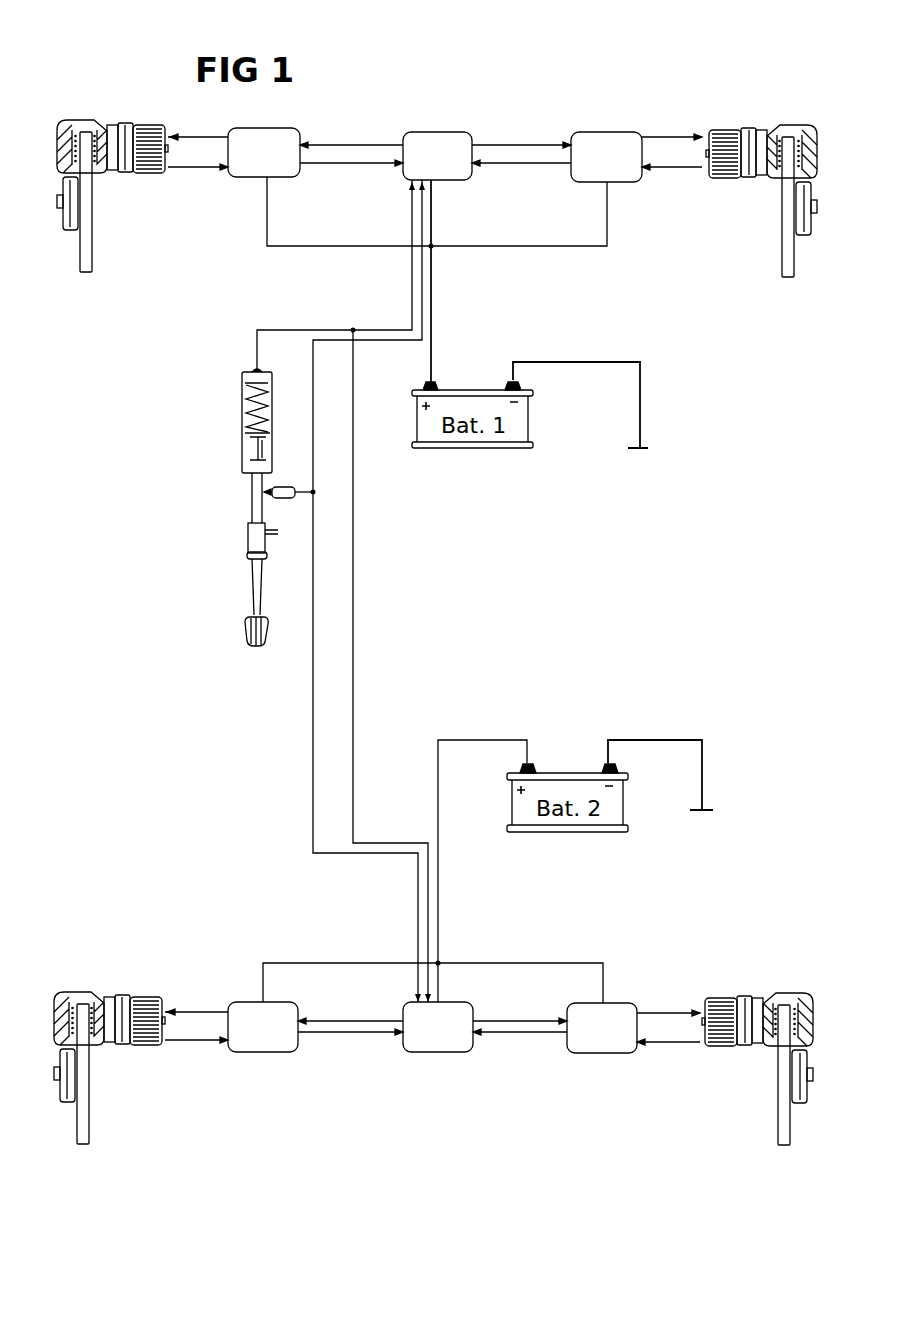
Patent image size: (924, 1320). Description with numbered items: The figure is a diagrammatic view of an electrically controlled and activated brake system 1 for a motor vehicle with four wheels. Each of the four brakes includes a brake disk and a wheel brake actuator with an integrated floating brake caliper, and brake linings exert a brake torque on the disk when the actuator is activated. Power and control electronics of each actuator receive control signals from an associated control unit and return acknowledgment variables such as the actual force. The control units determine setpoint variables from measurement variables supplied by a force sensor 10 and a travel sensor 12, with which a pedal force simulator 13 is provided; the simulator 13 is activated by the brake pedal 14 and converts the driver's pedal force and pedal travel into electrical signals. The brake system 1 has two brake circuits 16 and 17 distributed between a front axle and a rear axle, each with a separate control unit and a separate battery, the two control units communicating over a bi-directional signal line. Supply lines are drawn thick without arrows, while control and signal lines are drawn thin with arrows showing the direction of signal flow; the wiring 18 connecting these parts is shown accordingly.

The brake system 1 is at (236, 508).
The force sensor 10 is at (233, 486).
The travel sensor 12 is at (285, 500).
The pedal force simulator 13 is at (242, 460).
The brake pedal 14 is at (248, 620).
The brake circuit 16 is at (435, 152).
The brake circuit 17 is at (432, 1049).
The wiring 18 is at (312, 788).